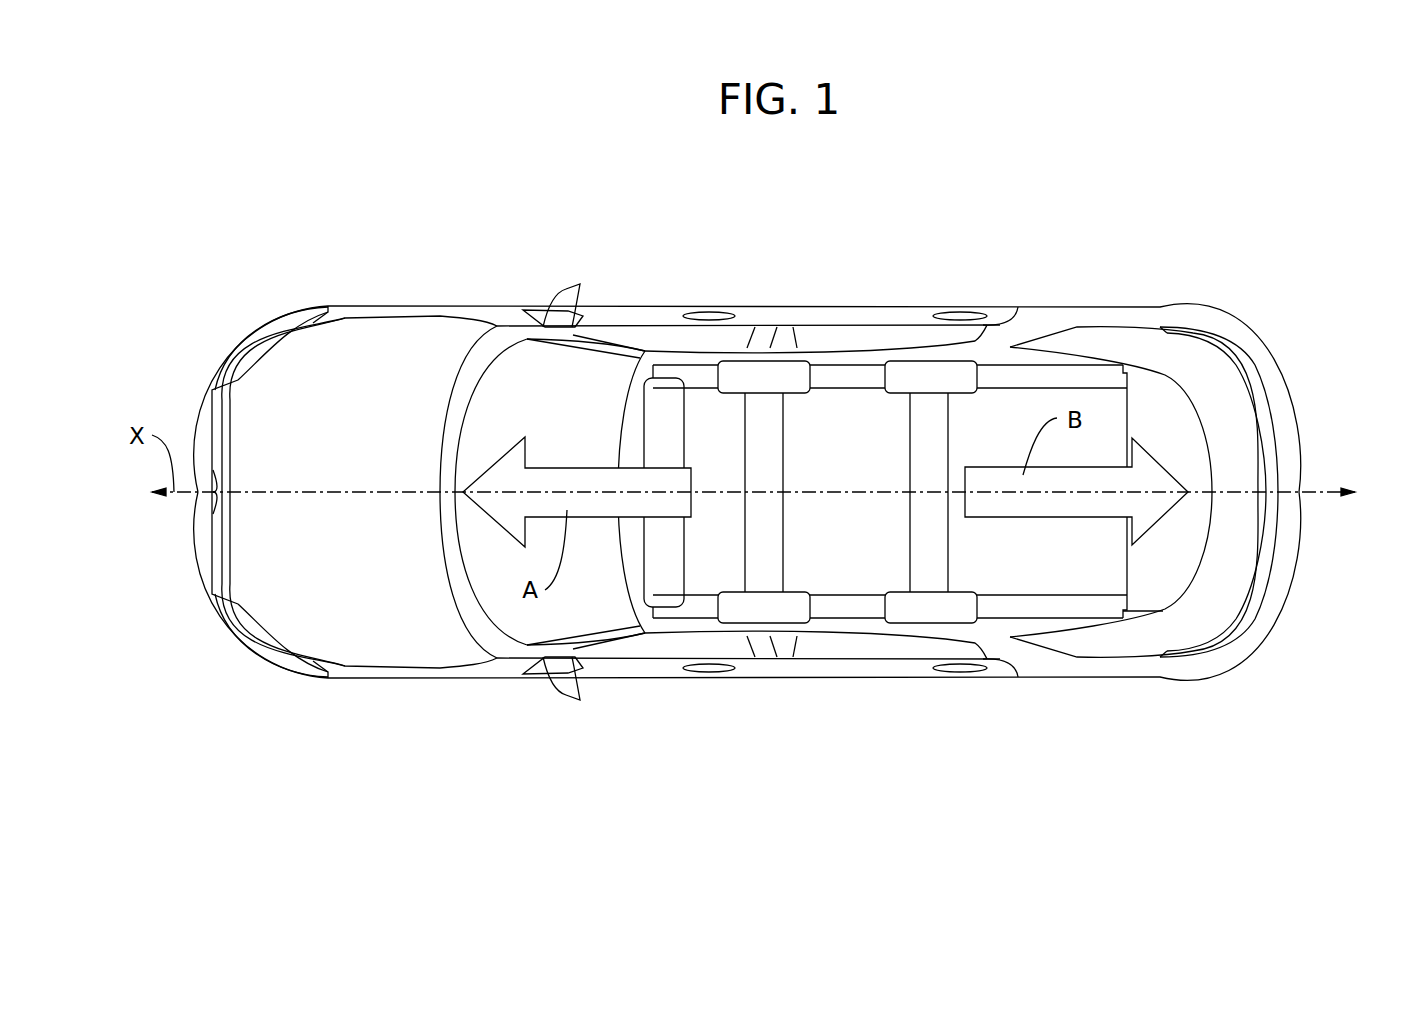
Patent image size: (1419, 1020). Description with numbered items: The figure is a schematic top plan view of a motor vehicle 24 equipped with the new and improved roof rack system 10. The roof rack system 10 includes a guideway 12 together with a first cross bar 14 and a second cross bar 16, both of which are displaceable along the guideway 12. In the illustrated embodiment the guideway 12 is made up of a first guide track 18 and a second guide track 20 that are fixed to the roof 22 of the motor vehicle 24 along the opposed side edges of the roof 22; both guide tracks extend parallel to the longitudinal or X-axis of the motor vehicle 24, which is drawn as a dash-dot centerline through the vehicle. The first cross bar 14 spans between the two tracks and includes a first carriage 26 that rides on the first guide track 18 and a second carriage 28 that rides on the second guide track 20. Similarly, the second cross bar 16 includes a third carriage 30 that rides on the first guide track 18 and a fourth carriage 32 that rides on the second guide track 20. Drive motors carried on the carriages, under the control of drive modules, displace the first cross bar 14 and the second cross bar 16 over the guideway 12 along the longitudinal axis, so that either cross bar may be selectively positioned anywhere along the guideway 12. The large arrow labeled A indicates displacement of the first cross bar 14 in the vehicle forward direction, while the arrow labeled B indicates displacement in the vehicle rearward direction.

The roof rack system 10 is at (303, 274).
The guideway 12 is at (1150, 398).
The first cross bar 14 is at (755, 555).
The second cross bar 16 is at (923, 553).
The first guide track 18 is at (848, 372).
The second guide track 20 is at (1022, 612).
The roof 22 is at (1033, 562).
The motor vehicle 24 is at (1287, 592).
The first carriage 26 is at (738, 372).
The second carriage 28 is at (738, 617).
The third carriage 30 is at (960, 372).
The fourth carriage 32 is at (921, 612).